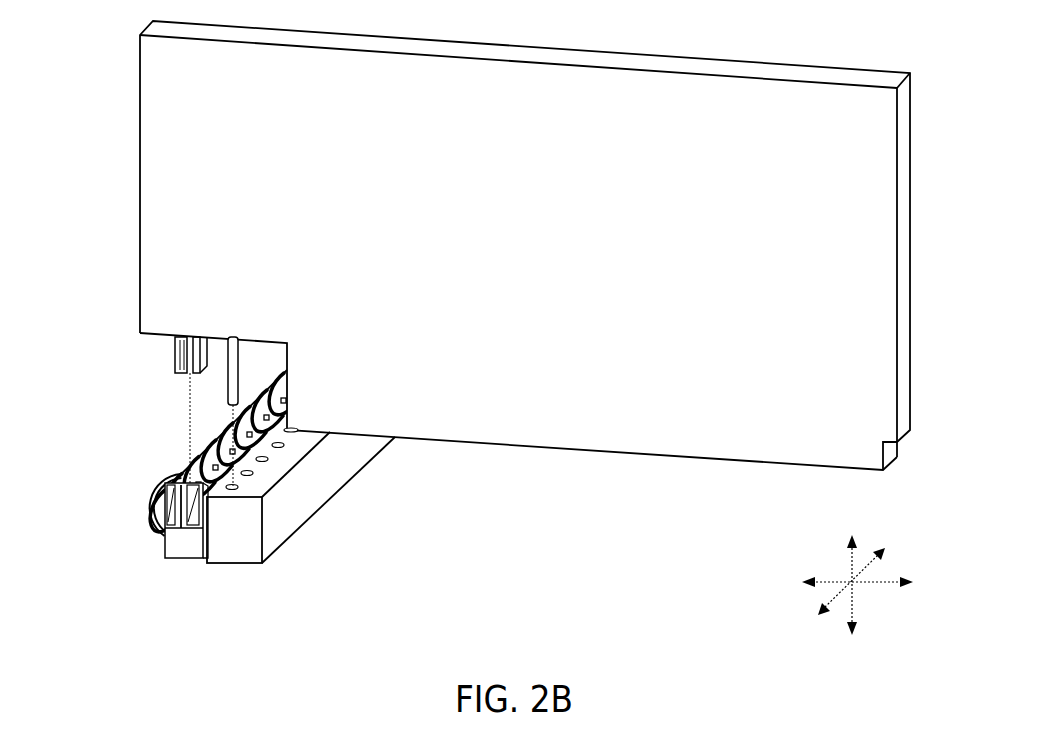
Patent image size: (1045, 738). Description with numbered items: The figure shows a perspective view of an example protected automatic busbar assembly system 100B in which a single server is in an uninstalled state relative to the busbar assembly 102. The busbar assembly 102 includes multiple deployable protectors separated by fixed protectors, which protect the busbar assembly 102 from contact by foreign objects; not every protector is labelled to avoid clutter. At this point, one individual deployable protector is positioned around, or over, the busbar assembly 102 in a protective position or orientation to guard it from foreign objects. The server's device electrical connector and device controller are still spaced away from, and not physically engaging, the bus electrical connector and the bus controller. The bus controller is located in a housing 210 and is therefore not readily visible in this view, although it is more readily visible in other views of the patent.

The protected automatic busbar assembly system 100B is at (928, 32).
The busbar assembly 102 is at (265, 516).
The housing 210 is at (343, 486).